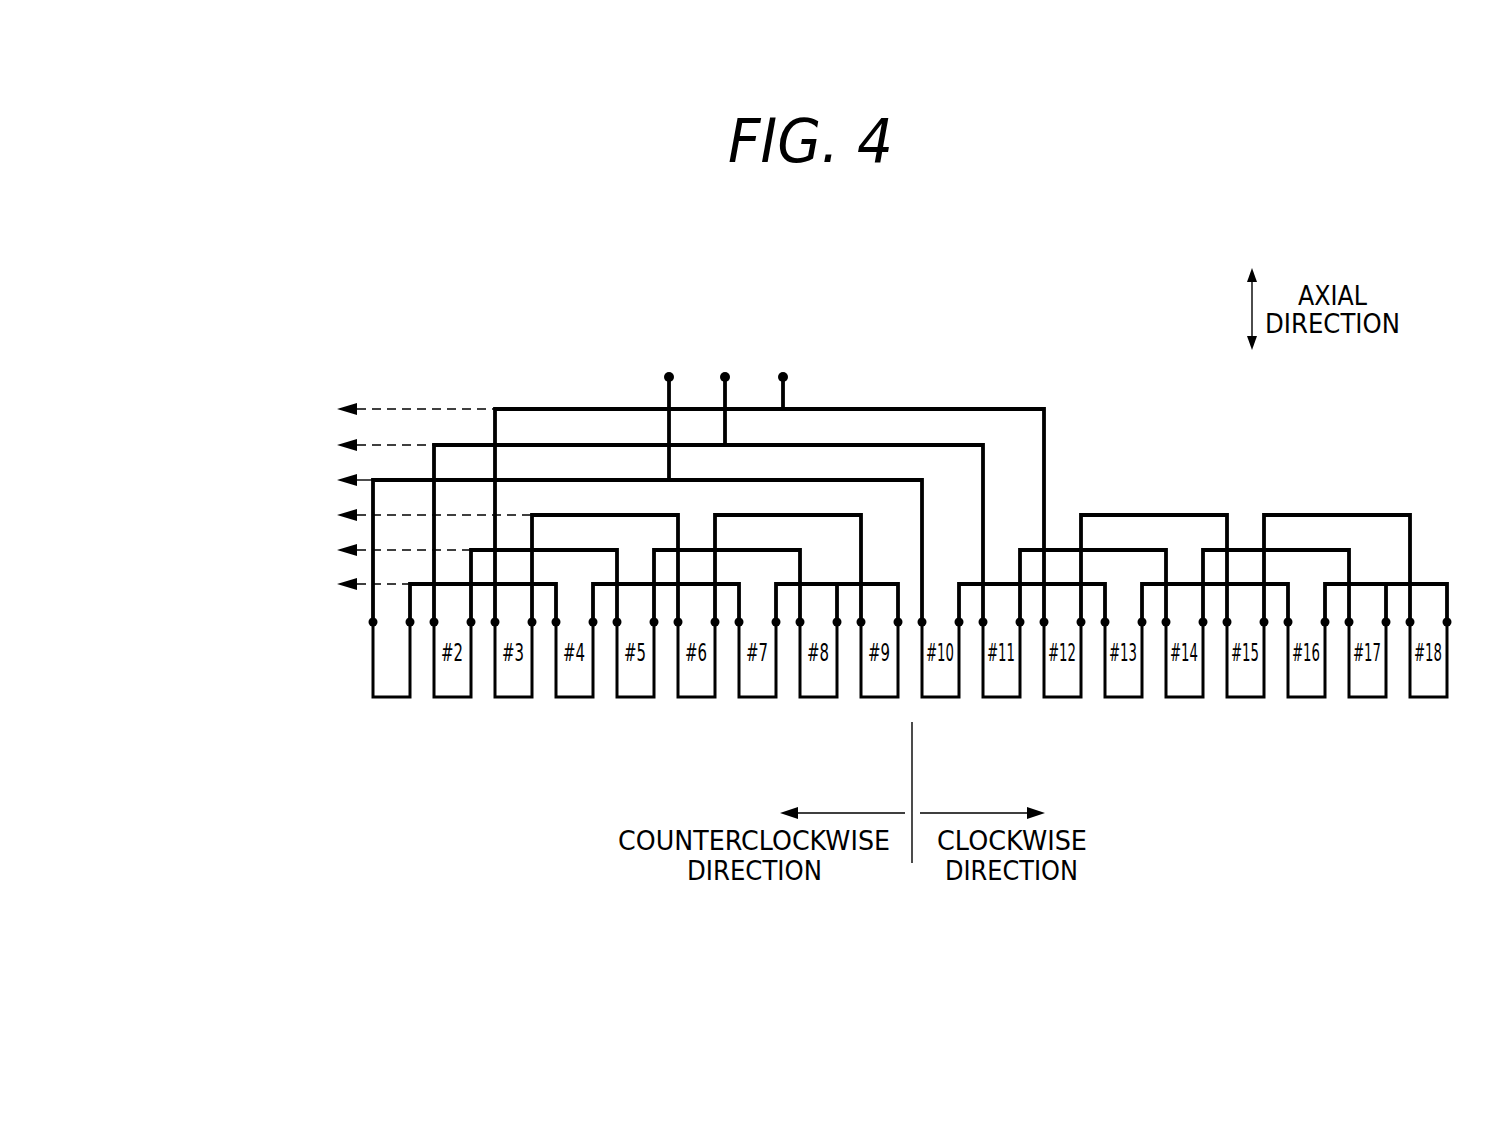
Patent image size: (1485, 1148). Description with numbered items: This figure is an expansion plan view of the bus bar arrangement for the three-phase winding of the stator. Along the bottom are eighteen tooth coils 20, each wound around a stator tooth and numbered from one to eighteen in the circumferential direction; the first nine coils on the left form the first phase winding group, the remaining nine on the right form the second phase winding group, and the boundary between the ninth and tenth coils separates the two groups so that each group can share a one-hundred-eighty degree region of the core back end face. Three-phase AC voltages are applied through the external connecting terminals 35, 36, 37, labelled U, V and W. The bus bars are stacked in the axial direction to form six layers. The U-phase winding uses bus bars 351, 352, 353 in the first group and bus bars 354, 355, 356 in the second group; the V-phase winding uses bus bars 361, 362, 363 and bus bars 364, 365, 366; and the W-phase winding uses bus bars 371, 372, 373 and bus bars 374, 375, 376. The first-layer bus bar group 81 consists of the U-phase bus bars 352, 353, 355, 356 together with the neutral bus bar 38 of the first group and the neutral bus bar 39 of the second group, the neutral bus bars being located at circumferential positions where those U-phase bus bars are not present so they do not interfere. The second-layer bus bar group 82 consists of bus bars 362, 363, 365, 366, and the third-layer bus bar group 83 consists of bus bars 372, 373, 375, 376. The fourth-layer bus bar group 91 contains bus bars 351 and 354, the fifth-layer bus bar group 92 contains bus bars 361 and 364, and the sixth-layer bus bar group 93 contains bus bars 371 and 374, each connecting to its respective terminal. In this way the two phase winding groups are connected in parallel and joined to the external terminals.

The tooth coil 20 is at (360, 676).
The external connecting terminal 35 is at (662, 415).
The external connecting terminal 36 is at (713, 417).
The external connecting terminal 37 is at (772, 395).
The neutral bus bar 38 is at (878, 583).
The neutral bus bar 39 is at (1427, 585).
The first-layer bus bar group 81 is at (193, 584).
The second-layer bus bar group 82 is at (193, 550).
The third-layer bus bar group 83 is at (193, 515).
The fourth-layer bus bar group 91 is at (193, 480).
The fifth-layer bus bar group 92 is at (193, 445).
The sixth-layer bus bar group 93 is at (193, 410).
The bus bar 351 is at (508, 478).
The bus bar 352 is at (548, 583).
The bus bar 353 is at (732, 582).
The bus bar 354 is at (913, 480).
The bus bar 355 is at (968, 582).
The bus bar 356 is at (1148, 585).
The bus bar 361 is at (527, 443).
The bus bar 362 is at (605, 548).
The bus bar 363 is at (850, 513).
The bus bar 364 is at (958, 445).
The bus bar 365 is at (1058, 550).
The bus bar 366 is at (1243, 550).
The bus bar 371 is at (552, 407).
The bus bar 372 is at (640, 515).
The bus bar 373 is at (790, 547).
The bus bar 374 is at (1007, 407).
The bus bar 375 is at (1108, 515).
The bus bar 376 is at (1315, 515).